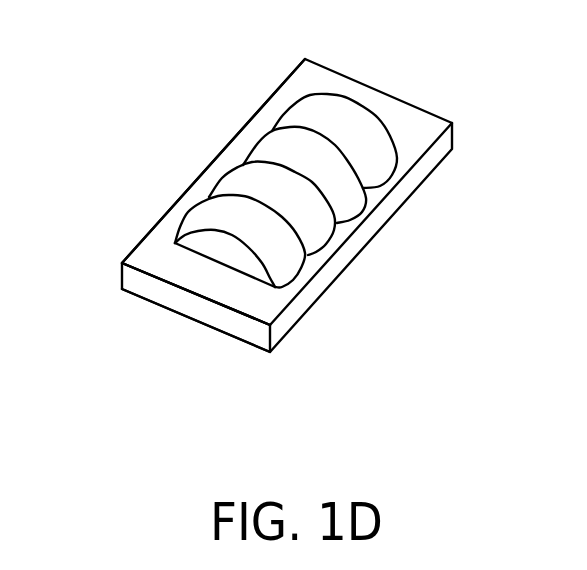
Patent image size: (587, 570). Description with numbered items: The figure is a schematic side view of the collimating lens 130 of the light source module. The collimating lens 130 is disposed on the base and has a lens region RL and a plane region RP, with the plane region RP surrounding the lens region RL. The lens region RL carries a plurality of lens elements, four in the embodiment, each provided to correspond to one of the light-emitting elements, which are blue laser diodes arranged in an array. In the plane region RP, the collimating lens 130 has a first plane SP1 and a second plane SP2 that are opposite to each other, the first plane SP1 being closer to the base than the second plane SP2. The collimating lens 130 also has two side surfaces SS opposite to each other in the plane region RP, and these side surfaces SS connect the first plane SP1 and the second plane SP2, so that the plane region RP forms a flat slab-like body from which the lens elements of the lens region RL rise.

The collimating lens 130 is at (294, 218).
The lens region RL is at (283, 163).
The plane region RP is at (412, 123).
The second plane SP2 is at (184, 273).
The side surfaces SS is at (140, 279).
The first plane SP1 is at (213, 330).